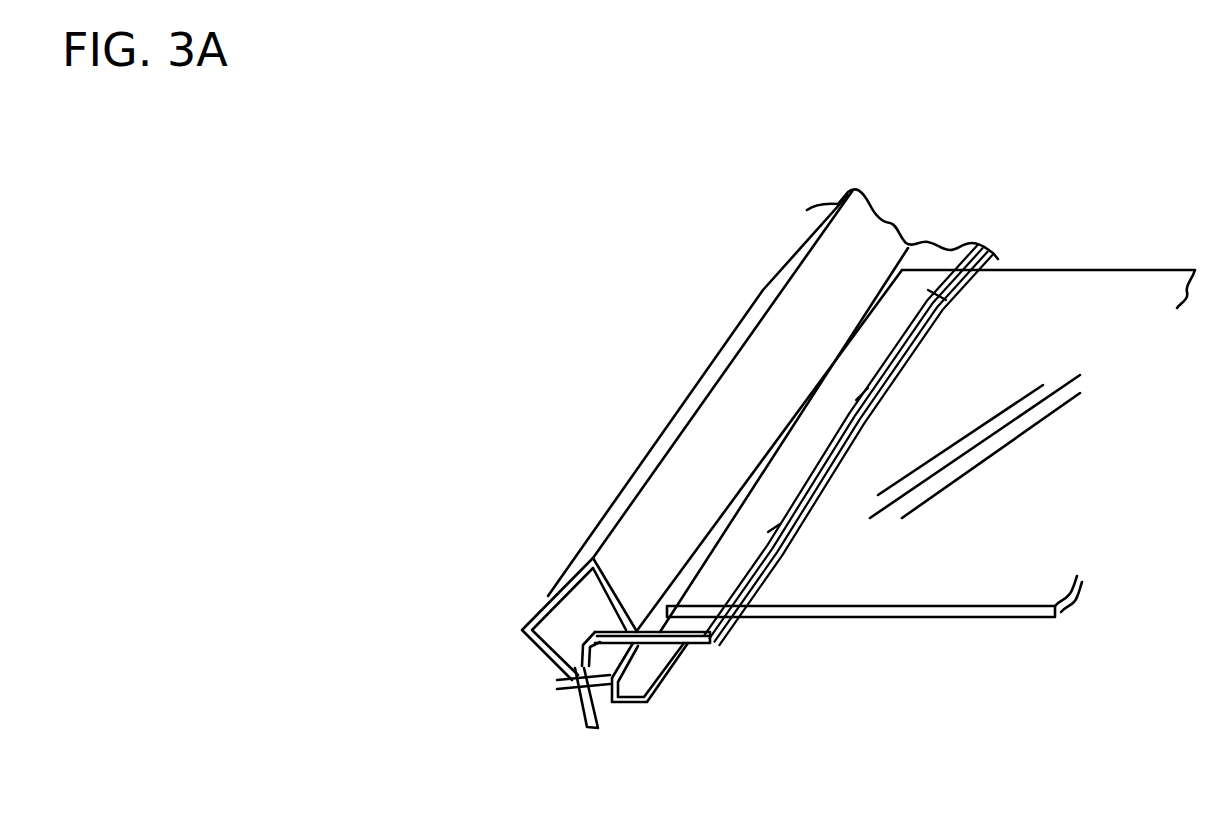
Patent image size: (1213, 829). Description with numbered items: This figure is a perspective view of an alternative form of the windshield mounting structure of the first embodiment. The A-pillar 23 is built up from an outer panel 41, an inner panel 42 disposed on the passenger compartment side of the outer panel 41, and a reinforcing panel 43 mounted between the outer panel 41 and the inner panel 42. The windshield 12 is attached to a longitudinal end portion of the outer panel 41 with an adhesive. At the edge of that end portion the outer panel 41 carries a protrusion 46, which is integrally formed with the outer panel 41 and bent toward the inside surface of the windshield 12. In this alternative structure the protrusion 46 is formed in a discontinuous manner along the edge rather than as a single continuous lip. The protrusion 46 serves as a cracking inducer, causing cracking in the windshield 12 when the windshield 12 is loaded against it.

The windshield 12 is at (945, 619).
The A-pillar 23 is at (683, 397).
The outer panel 41 is at (522, 632).
The inner panel 42 is at (634, 706).
The reinforcing panel 43 is at (566, 684).
The protrusion 46 is at (847, 418).